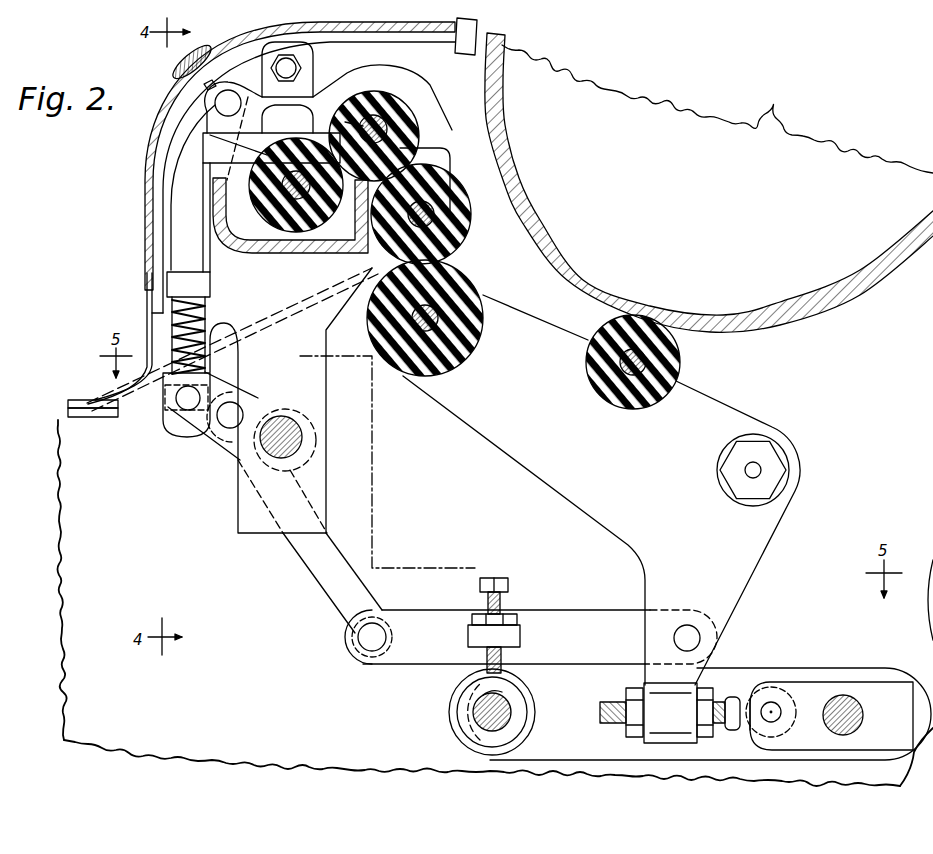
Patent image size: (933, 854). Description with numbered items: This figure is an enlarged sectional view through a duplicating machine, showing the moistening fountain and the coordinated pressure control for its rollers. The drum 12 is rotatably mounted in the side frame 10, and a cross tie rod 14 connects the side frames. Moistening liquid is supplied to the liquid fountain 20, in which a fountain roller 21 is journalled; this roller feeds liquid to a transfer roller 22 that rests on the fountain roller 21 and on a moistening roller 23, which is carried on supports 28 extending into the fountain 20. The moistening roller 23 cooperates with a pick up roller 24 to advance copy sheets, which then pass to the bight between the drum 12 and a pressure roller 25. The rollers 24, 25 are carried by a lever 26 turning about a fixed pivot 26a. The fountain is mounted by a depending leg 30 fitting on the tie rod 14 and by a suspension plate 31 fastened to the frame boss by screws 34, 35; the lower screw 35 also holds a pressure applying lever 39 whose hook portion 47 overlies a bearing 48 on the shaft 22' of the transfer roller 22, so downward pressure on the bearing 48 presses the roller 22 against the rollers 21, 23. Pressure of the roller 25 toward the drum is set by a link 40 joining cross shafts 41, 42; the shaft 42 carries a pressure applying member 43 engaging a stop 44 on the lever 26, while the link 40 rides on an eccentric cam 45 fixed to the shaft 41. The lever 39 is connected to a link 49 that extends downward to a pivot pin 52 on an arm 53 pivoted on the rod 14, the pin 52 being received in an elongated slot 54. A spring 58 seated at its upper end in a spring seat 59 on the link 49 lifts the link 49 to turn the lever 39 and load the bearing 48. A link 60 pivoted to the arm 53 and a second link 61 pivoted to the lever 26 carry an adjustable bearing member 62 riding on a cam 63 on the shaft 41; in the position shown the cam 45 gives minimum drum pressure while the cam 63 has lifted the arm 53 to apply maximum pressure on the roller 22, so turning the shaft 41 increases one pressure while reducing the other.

The side frame 10 is at (922, 358).
The drum 12 is at (585, 270).
The cross tie rod 14 is at (280, 418).
The liquid fountain 20 is at (270, 253).
The fountain roller 21 is at (252, 190).
The transfer roller 22 is at (399, 136).
The shaft 22' is at (342, 122).
The moistening roller 23 is at (455, 203).
The pick up roller 24 is at (464, 292).
The pressure roller 25 is at (604, 333).
The lever 26 is at (517, 451).
The pivot 26a is at (755, 452).
The support 28 is at (447, 163).
The depending leg 30 is at (318, 485).
The suspension plate 31 is at (314, 67).
The screw 34 is at (286, 68).
The screw 35 is at (287, 119).
The pressure applying lever 39 is at (254, 91).
The link 40 is at (772, 676).
The cross shaft 41 is at (513, 708).
The cross shaft 42 is at (864, 716).
The pressure applying member 43 is at (815, 692).
The stop 44 is at (708, 709).
The eccentric cam 45 is at (540, 722).
The hook portion 47 is at (378, 83).
The bearing 48 is at (387, 118).
The link 49 is at (187, 167).
The pivot pin 52 is at (186, 397).
The arm 53 is at (216, 452).
The elongated slot 54 is at (173, 430).
The spring 58 is at (207, 313).
The spring seat 59 is at (188, 284).
The link 60 is at (302, 560).
The link 61 is at (558, 623).
The adjustable bearing member 62 is at (487, 603).
The cam 63 is at (455, 693).